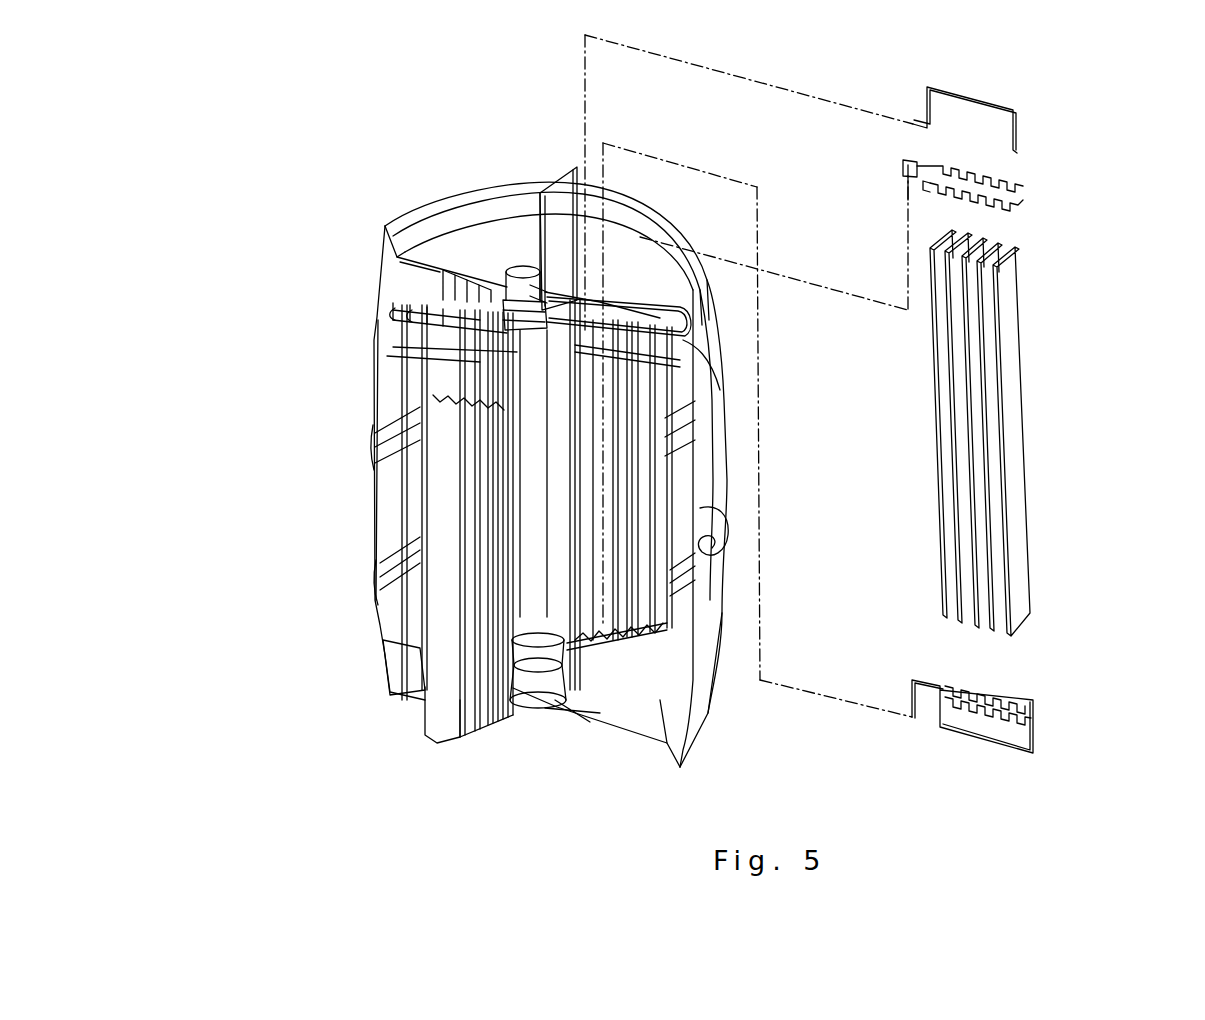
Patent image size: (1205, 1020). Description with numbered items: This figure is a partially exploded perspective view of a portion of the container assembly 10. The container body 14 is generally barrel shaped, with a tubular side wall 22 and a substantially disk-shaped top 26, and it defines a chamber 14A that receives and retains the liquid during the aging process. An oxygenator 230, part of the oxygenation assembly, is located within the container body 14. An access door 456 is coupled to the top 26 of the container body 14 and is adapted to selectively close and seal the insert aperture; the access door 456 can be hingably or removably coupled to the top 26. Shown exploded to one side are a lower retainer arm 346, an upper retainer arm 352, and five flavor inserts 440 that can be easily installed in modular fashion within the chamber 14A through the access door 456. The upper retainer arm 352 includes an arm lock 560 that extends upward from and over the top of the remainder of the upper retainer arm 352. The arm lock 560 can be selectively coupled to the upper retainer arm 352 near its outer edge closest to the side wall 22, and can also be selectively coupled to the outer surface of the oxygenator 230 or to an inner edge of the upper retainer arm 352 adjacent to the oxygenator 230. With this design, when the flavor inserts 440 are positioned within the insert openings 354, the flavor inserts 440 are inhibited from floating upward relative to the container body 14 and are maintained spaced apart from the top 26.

The container assembly 10 is at (368, 125).
The container body 14 is at (388, 491).
The chamber 14A is at (683, 533).
The side wall 22 is at (385, 385).
The top 26 is at (505, 245).
The oxygenator 230 is at (535, 550).
The access door 456 is at (582, 197).
The arm lock 560 is at (1018, 130).
The insert openings 354 is at (1020, 187).
The upper retainer arm 352 is at (995, 204).
The flavor inserts 440 is at (1017, 490).
The lower retainer arm 346 is at (1035, 708).